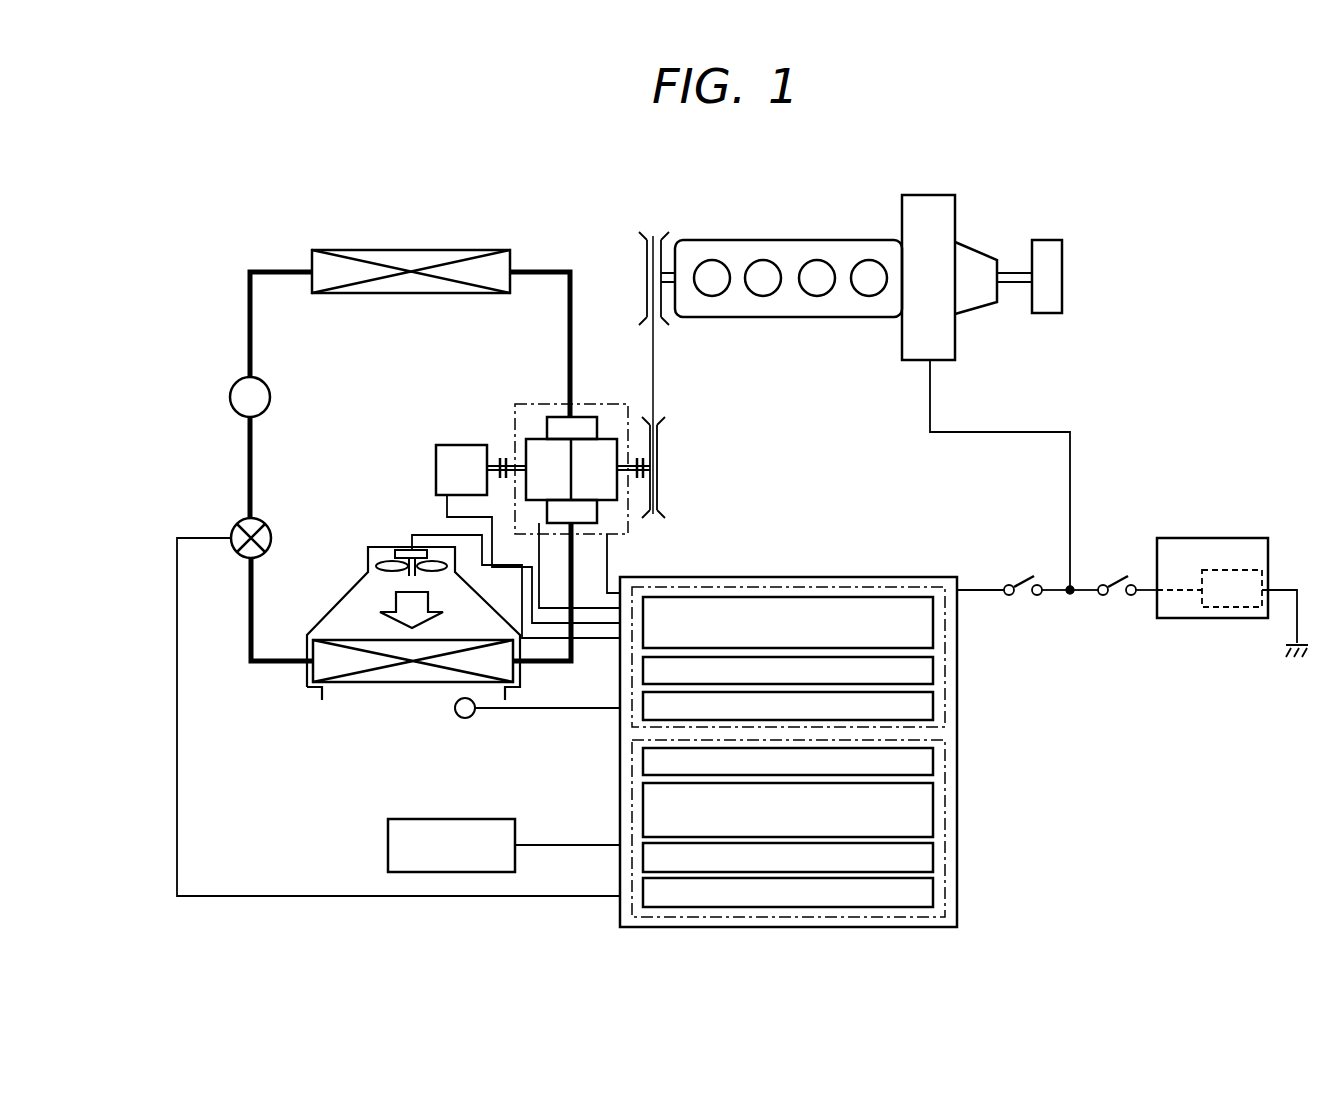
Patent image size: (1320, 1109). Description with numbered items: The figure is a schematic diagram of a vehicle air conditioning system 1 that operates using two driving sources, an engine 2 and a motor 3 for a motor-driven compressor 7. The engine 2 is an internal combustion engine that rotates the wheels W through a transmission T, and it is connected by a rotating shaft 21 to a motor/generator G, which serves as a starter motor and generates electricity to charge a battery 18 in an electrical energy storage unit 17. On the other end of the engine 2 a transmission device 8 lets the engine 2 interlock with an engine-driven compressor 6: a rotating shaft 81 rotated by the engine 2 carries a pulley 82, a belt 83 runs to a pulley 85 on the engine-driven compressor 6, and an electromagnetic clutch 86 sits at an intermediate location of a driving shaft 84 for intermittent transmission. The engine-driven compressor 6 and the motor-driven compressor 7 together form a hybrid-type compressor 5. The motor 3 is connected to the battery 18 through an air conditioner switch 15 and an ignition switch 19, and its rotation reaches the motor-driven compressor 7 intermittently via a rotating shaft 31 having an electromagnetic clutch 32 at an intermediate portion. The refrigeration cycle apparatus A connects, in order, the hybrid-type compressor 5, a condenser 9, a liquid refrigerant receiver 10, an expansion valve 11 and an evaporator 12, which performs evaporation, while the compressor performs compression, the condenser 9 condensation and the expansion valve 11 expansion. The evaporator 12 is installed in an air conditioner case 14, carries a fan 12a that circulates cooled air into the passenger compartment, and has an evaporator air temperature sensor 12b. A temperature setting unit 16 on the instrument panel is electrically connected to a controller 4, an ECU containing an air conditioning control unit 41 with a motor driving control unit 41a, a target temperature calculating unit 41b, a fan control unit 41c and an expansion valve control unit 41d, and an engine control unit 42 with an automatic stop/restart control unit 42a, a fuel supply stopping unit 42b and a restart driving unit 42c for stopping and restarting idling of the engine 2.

The air conditioning system 1 is at (205, 268).
The refrigeration cycle apparatus A is at (540, 225).
The engine 2 is at (778, 240).
The motor 3 is at (447, 445).
The rotating shaft 31 is at (498, 462).
The electromagnetic clutch 32 is at (513, 455).
The controller 4 is at (958, 733).
The hybrid-type compressor 5 is at (520, 404).
The engine-driven compressor 6 is at (603, 487).
The motor-driven compressor 7 is at (550, 490).
The transmission device 8 is at (703, 378).
The rotating shaft 81 is at (668, 270).
The pulley 82 is at (644, 237).
The belt 83 is at (655, 360).
The driving shaft 84 is at (643, 465).
The pulley 85 is at (660, 425).
The electromagnetic clutch 86 is at (658, 480).
The condenser 9 is at (413, 250).
The liquid refrigerant receiver 10 is at (232, 389).
The expansion valve 11 is at (232, 528).
The evaporator 12 is at (352, 685).
The fan 12a is at (393, 557).
The evaporator air temperature sensor 12b is at (472, 715).
The air conditioner case 14 is at (338, 606).
The air conditioner switch 15 is at (1022, 583).
The temperature setting unit 16 is at (388, 841).
The electrical energy storage unit 17 is at (1193, 538).
The battery 18 is at (1240, 570).
The ignition switch 19 is at (1116, 583).
The rotating shaft 21 is at (1016, 284).
The motor/generator G is at (930, 195).
The transmission T is at (975, 250).
The wheels W is at (1047, 240).
The air conditioning control unit 41 is at (945, 828).
The motor driving control unit 41a is at (934, 757).
The target temperature calculating unit 41b is at (934, 795).
The fan control unit 41c is at (934, 855).
The expansion valve control unit 41d is at (934, 890).
The engine control unit 42 is at (945, 672).
The automatic stop/restart control unit 42a is at (934, 621).
The fuel supply stopping unit 42b is at (934, 665).
The restart driving unit 42c is at (934, 703).